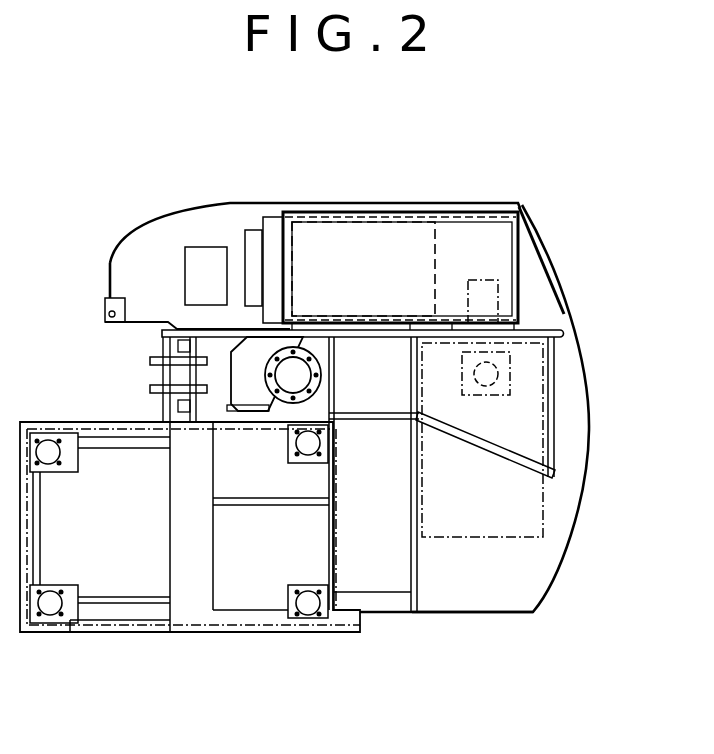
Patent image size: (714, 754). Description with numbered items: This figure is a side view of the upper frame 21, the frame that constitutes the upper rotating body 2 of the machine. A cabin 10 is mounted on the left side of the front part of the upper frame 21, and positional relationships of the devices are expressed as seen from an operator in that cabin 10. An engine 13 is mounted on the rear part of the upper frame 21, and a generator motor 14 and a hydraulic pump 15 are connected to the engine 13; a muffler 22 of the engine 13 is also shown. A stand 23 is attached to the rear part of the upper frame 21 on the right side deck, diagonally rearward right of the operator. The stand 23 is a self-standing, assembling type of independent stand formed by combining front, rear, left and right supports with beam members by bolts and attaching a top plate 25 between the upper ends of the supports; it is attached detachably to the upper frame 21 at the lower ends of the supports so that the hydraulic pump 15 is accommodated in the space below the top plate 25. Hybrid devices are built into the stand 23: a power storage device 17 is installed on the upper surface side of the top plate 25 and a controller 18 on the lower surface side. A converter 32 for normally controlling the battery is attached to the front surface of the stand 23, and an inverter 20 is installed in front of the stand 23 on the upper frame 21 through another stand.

The upper rotating body 2 is at (250, 640).
The cabin 10 is at (115, 625).
The engine 13 is at (543, 503).
The generator motor 14 is at (522, 341).
The hydraulic pump 15 is at (498, 300).
The power storage device 17 is at (487, 218).
The controller 18 is at (413, 237).
The inverter 20 is at (200, 247).
The upper frame 21 is at (475, 617).
The muffler 22 is at (510, 374).
The stand 23 is at (536, 232).
The top plate 25 is at (360, 212).
The converter 32 is at (253, 230).